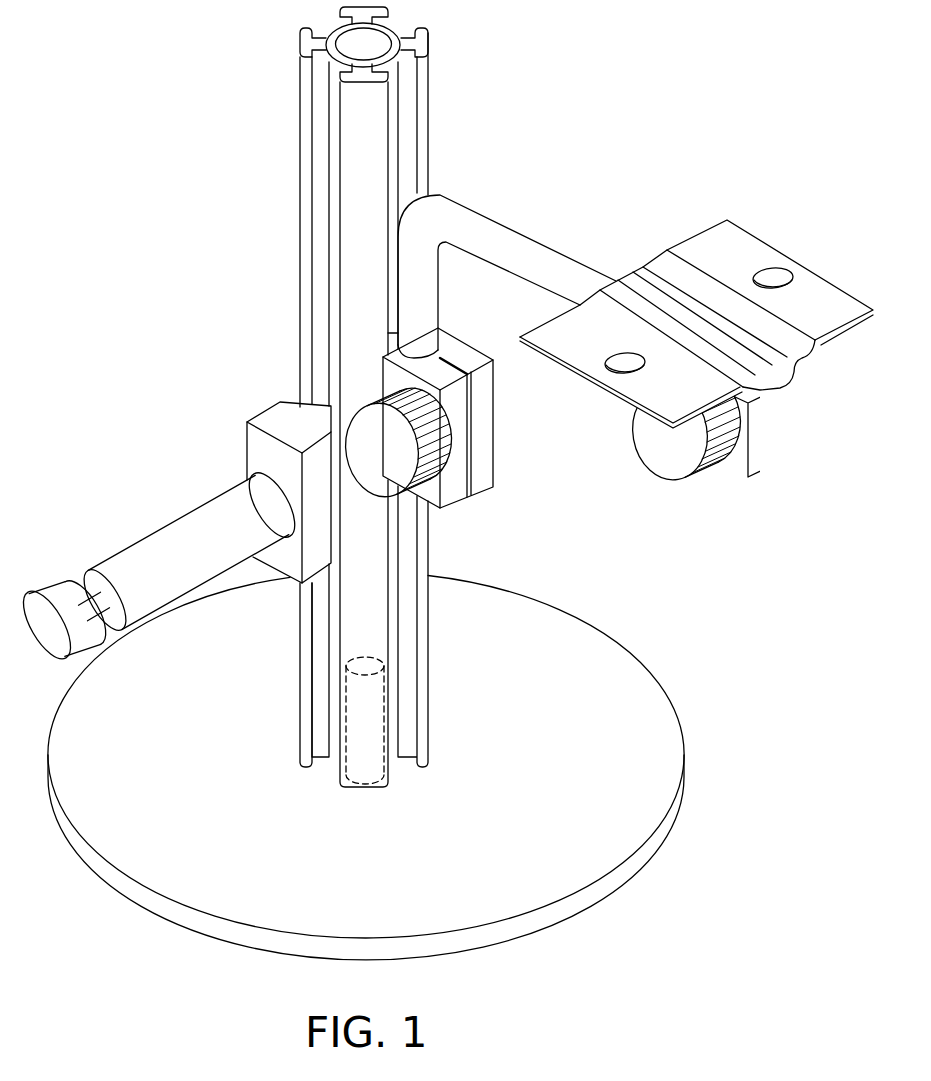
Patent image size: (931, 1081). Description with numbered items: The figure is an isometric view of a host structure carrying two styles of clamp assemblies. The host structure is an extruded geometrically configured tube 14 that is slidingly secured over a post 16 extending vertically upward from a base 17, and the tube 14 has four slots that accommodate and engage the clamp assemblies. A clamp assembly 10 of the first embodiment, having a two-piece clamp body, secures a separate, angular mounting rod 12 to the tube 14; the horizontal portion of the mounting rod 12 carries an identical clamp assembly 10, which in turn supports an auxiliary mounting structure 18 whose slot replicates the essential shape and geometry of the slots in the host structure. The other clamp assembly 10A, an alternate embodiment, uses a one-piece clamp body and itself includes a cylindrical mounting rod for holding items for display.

The clamp assembly 10 is at (522, 465).
The clamp assembly 10A is at (159, 510).
The mounting rod 12 is at (532, 253).
The extruded geometrically configured tube 14 is at (438, 63).
The post 16 is at (345, 747).
The base 17 is at (648, 740).
The auxiliary mounting structure 18 is at (740, 248).